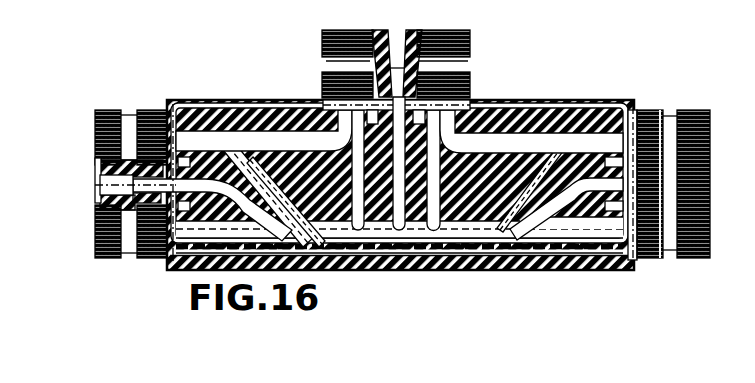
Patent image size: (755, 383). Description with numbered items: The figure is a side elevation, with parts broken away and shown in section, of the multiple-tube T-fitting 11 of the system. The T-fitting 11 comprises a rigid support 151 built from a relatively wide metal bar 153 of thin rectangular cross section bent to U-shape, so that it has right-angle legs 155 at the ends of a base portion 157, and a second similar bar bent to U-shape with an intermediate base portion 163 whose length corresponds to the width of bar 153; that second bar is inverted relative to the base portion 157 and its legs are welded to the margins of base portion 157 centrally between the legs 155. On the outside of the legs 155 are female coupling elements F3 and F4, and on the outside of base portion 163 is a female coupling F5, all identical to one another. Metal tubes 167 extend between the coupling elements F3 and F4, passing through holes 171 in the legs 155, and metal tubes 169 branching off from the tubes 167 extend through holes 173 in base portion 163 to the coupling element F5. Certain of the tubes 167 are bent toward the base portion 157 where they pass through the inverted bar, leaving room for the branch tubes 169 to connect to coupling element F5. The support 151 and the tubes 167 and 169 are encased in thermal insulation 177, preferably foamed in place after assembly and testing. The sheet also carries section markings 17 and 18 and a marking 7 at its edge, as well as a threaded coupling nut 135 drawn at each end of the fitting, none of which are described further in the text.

The T-fitting 11 is at (511, 278).
The rigid support 151 is at (168, 258).
The metal bar 153 is at (593, 250).
The legs 155 is at (169, 102).
The base portion 157 is at (433, 232).
The intermediate base portion 163 is at (492, 116).
The metal tubes 167 is at (306, 236).
The branch tubes 169 is at (272, 148).
The holes 171 is at (198, 114).
The holes 173 is at (312, 97).
The thermal insulation 177 is at (530, 140).
The threaded coupling nut 135 is at (147, 110).
The section line 17- 17 is at (145, 26).
The section line 18- 18 is at (73, 15).
The section line 7 is at (4, 182).
The female coupling element F3 is at (94, 129).
The female coupling element F4 is at (713, 137).
The female coupling F5 is at (476, 43).